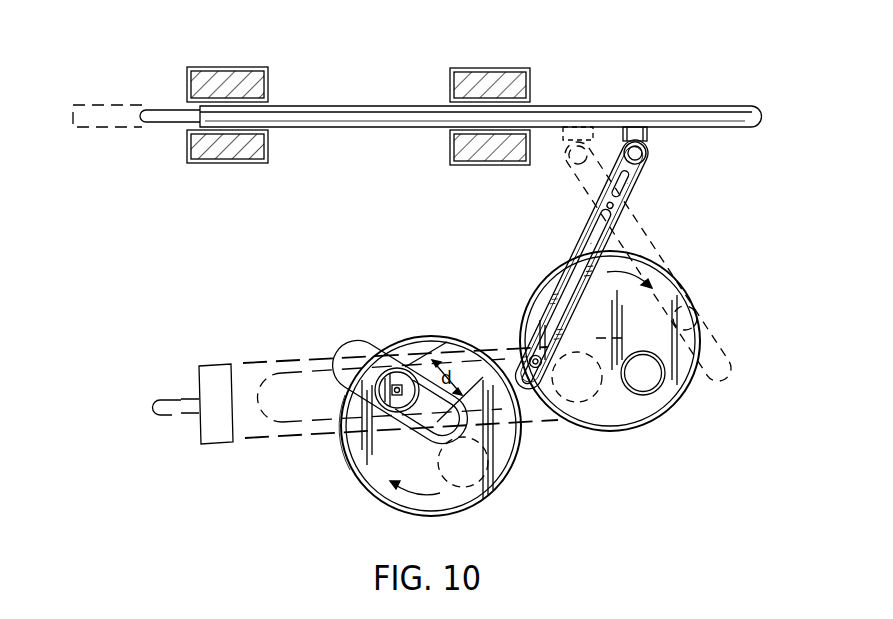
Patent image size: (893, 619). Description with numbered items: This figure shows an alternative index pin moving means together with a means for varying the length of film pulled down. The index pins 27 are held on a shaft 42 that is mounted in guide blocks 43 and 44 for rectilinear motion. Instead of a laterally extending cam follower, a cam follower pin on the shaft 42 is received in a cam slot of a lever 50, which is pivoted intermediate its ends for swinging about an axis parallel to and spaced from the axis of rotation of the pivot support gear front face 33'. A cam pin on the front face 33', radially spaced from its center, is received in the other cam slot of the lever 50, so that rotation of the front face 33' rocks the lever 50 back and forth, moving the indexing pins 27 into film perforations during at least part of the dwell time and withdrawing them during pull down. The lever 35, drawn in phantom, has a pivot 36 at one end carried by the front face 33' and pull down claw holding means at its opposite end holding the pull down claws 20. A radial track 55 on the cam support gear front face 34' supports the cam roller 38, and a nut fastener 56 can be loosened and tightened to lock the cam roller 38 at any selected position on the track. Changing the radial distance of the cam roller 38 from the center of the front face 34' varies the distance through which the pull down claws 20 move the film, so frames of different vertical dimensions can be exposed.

The pull down claws 20 is at (168, 418).
The index pins 27 is at (165, 120).
The pivot support gear front face 33' is at (610, 361).
The cam support gear front face 34' is at (441, 431).
The lever 35 is at (243, 359).
The pivot 36 is at (660, 382).
The cam roller 38 is at (376, 371).
The shaft 42 is at (341, 106).
The guide block 43 is at (232, 67).
The guide block 44 is at (520, 68).
The lever 50 is at (581, 264).
The radial track 55 is at (384, 352).
The nut fastener 56 is at (350, 453).